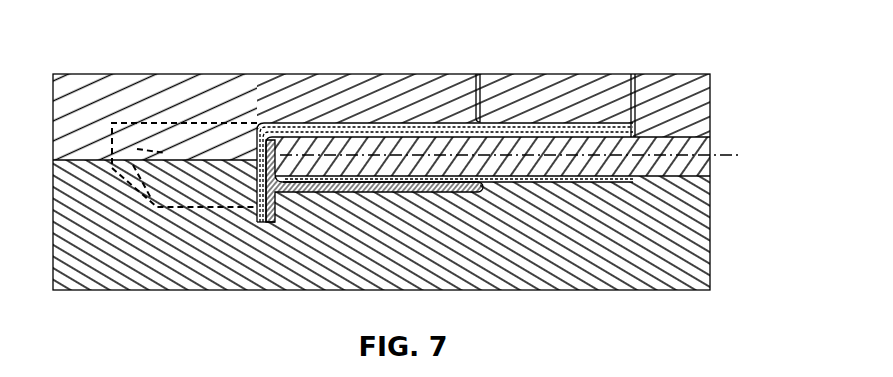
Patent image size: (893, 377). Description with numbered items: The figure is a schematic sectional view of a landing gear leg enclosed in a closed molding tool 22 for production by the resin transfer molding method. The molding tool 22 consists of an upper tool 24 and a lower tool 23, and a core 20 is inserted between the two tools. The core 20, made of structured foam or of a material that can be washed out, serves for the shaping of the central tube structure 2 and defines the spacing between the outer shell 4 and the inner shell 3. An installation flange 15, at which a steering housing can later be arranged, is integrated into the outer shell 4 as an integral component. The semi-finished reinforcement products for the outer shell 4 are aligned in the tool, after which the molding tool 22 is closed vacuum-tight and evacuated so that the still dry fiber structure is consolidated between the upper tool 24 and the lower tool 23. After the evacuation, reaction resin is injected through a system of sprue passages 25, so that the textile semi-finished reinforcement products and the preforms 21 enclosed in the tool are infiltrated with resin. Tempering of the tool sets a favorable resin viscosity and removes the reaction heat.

The central tube structure 2 is at (559, 125).
The inner shell 3 is at (408, 133).
The outer shell 4 is at (317, 123).
The installation flange 15 is at (482, 122).
The core 20 is at (690, 136).
The preforms 21 is at (348, 123).
The molding tool 22 is at (593, 222).
The lower tool 23 is at (693, 203).
The upper tool 24 is at (710, 82).
The sprue passages 25 is at (478, 74).